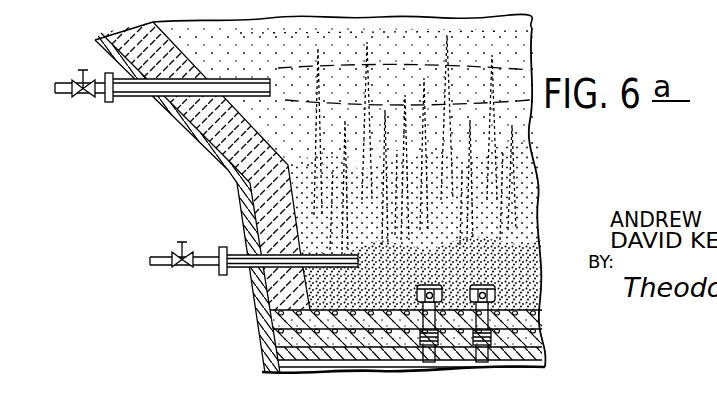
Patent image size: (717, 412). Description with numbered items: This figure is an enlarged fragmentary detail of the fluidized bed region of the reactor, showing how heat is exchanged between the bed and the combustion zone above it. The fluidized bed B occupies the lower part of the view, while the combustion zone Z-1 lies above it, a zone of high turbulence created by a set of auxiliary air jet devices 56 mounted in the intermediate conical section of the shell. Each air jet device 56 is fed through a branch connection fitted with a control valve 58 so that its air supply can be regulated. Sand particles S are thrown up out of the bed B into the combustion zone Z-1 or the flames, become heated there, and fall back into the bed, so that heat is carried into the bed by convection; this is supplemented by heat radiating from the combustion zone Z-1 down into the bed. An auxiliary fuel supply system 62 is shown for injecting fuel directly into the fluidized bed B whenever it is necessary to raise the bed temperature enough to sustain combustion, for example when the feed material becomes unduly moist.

The auxiliary air jet devices 56 is at (152, 85).
The control valve 58 is at (86, 94).
The auxiliary fuel supply system 62 is at (260, 258).
The combustion zone Z-1 is at (500, 60).
The sand particles S is at (443, 148).
The fluidized bed B is at (497, 270).